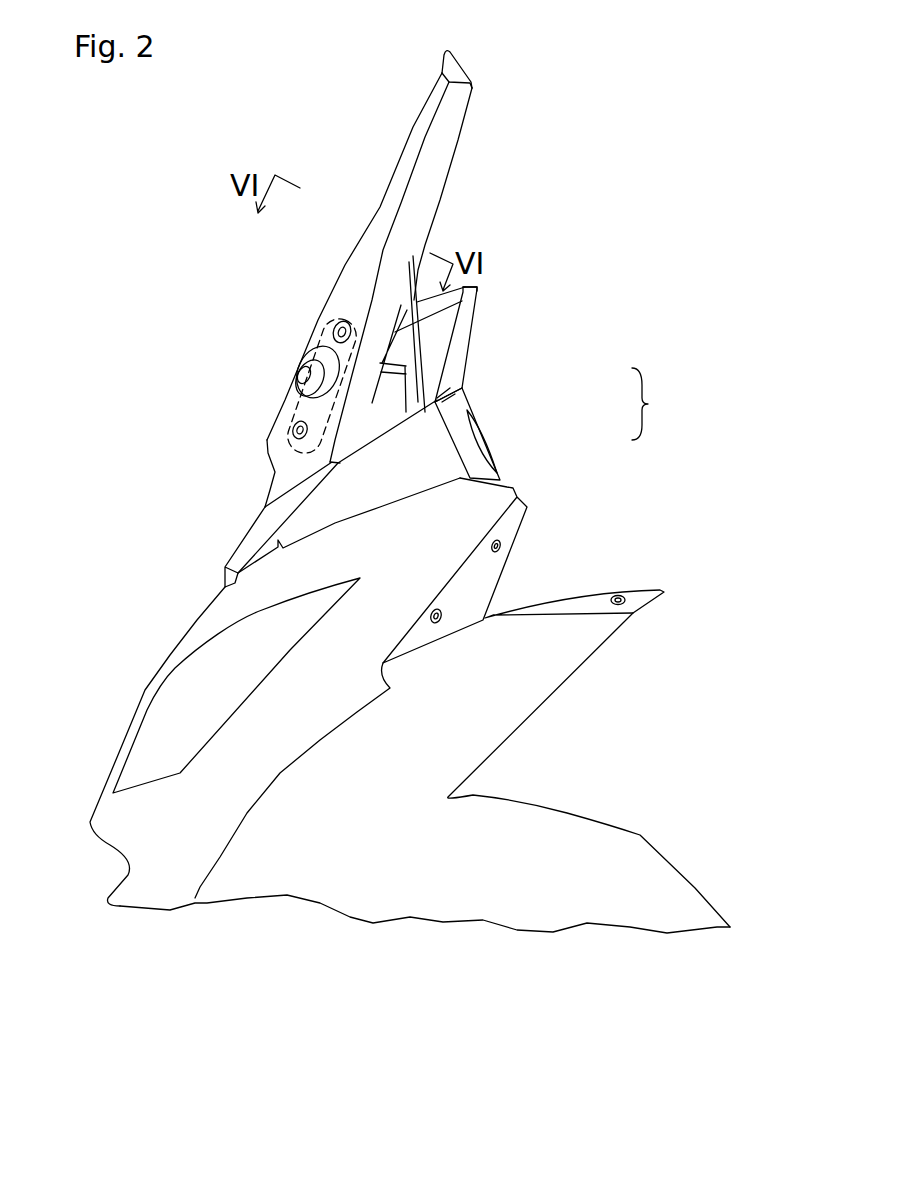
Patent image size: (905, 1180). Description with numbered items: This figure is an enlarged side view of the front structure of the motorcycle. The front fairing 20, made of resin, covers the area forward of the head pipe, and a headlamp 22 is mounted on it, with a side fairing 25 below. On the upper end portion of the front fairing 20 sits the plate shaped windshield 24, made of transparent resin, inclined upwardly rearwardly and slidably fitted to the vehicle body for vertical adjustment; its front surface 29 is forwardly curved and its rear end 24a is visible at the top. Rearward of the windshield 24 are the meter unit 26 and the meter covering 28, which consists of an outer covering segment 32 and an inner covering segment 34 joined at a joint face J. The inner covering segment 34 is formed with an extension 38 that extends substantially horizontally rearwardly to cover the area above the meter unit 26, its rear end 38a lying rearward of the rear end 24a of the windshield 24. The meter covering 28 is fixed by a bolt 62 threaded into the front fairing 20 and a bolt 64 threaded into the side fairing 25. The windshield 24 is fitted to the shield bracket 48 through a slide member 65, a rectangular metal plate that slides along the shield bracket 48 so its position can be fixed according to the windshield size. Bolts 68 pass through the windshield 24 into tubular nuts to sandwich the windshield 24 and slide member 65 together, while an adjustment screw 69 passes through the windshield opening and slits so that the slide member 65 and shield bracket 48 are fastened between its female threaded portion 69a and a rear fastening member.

The front fairing 20 is at (203, 620).
The headlamp 22 is at (170, 717).
The windshield 24 is at (408, 145).
The rear end of the windshield 24a is at (472, 83).
The side fairing 25 is at (365, 887).
The meter unit 26 is at (490, 447).
The meter covering 28 is at (660, 404).
The front surface of the windshield 29 is at (375, 193).
The outer covering segment 32 is at (433, 430).
The inner covering segment 34 is at (517, 520).
The extension 38 is at (478, 288).
The rear end of the extension 38a is at (478, 293).
The shield bracket 48 is at (405, 298).
The bolt 62 is at (441, 614).
The bolt 64 is at (620, 598).
The slide member 65 is at (338, 320).
The bolt 68 is at (335, 329).
The adjustment screw 69 is at (300, 394).
The female threaded portion 69a is at (300, 370).
The joint face J is at (449, 352).